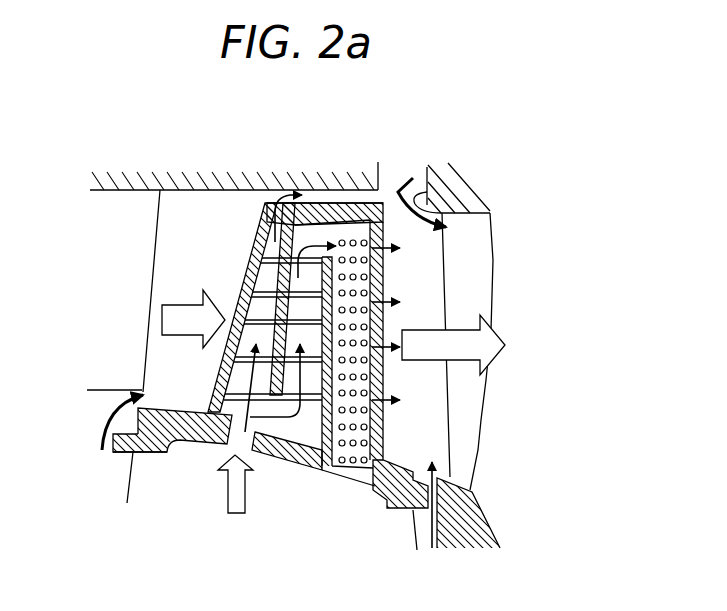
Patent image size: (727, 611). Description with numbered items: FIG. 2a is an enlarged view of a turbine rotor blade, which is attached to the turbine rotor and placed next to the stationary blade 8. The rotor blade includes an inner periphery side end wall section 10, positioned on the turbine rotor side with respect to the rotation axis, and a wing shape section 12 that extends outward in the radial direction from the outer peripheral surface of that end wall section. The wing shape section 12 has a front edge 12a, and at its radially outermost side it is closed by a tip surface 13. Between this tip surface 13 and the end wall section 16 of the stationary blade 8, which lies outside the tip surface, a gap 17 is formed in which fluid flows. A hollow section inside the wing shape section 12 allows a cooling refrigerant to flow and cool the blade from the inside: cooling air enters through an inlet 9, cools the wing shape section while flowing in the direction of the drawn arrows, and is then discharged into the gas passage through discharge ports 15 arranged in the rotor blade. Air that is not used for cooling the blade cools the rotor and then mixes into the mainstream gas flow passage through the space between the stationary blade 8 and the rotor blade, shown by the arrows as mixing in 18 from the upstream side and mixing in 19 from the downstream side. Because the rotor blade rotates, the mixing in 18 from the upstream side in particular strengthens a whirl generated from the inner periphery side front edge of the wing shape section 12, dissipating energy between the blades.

The stationary blade 8 is at (296, 333).
The inlet 9 is at (250, 455).
The inner periphery side end wall section 10 is at (162, 457).
The wing shape section 12 is at (211, 386).
The front edge 12a is at (363, 305).
The tip surface 13 is at (422, 185).
The discharge ports 15 is at (271, 201).
The end wall section of the stationary blade 16 is at (350, 182).
The gap 17 is at (328, 196).
The mixing in from the upstream side 18 is at (104, 425).
The mixing in from the downstream side 19 is at (363, 305).